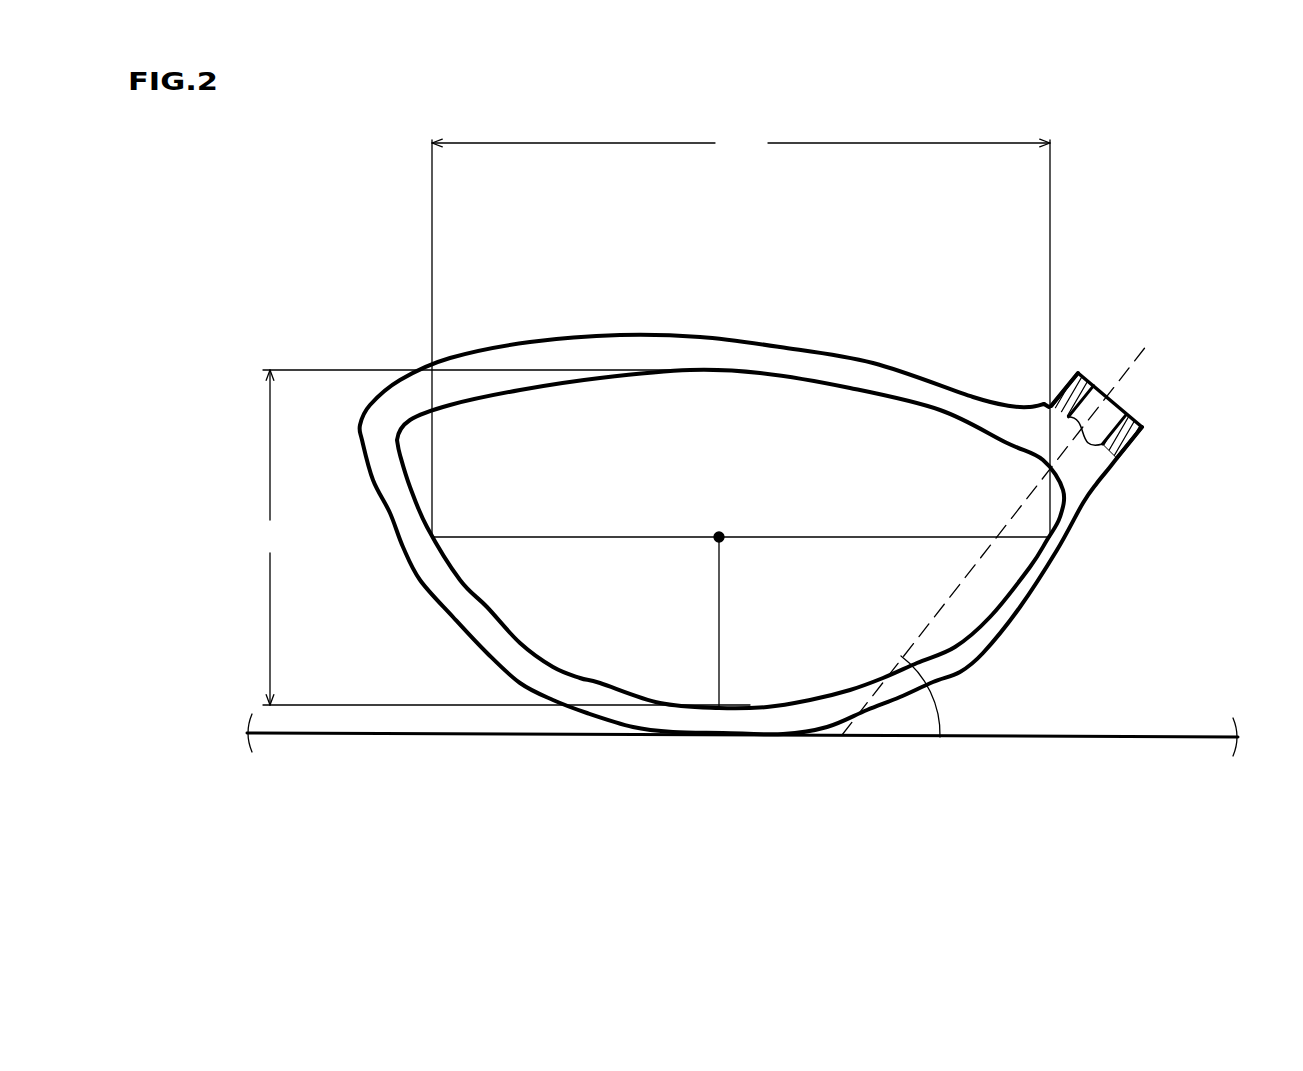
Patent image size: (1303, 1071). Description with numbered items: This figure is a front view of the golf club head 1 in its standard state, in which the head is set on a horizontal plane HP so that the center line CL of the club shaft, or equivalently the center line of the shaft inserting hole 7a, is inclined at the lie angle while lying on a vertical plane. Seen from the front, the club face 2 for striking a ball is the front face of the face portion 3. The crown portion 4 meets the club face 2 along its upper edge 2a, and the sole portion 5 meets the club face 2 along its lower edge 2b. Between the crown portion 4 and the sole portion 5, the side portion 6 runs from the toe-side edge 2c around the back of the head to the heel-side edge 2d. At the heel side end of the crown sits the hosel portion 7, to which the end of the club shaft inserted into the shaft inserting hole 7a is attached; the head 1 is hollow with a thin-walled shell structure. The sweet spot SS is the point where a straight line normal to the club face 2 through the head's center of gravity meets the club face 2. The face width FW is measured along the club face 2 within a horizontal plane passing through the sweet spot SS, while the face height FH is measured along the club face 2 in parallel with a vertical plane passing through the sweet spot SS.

The golf club head 1 is at (575, 270).
The club face 2 is at (487, 573).
The upper edge 2a is at (705, 370).
The lower edge 2b is at (728, 709).
The toe-side edge 2c is at (410, 492).
The heel-side edge 2d is at (1043, 553).
The face portion 3 is at (627, 623).
The crown portion 4 is at (537, 338).
The sole portion 5 is at (632, 728).
The side portion 6 is at (398, 548).
The hosel portion 7 is at (1095, 378).
The shaft inserting hole 7a is at (1123, 410).
The sweet spot SS is at (719, 542).
The center line of the club shaft CL is at (1130, 372).
The horizontal plane HP is at (1038, 735).
The width of the club face FW is at (741, 418).
The height of the club face FH is at (501, 537).